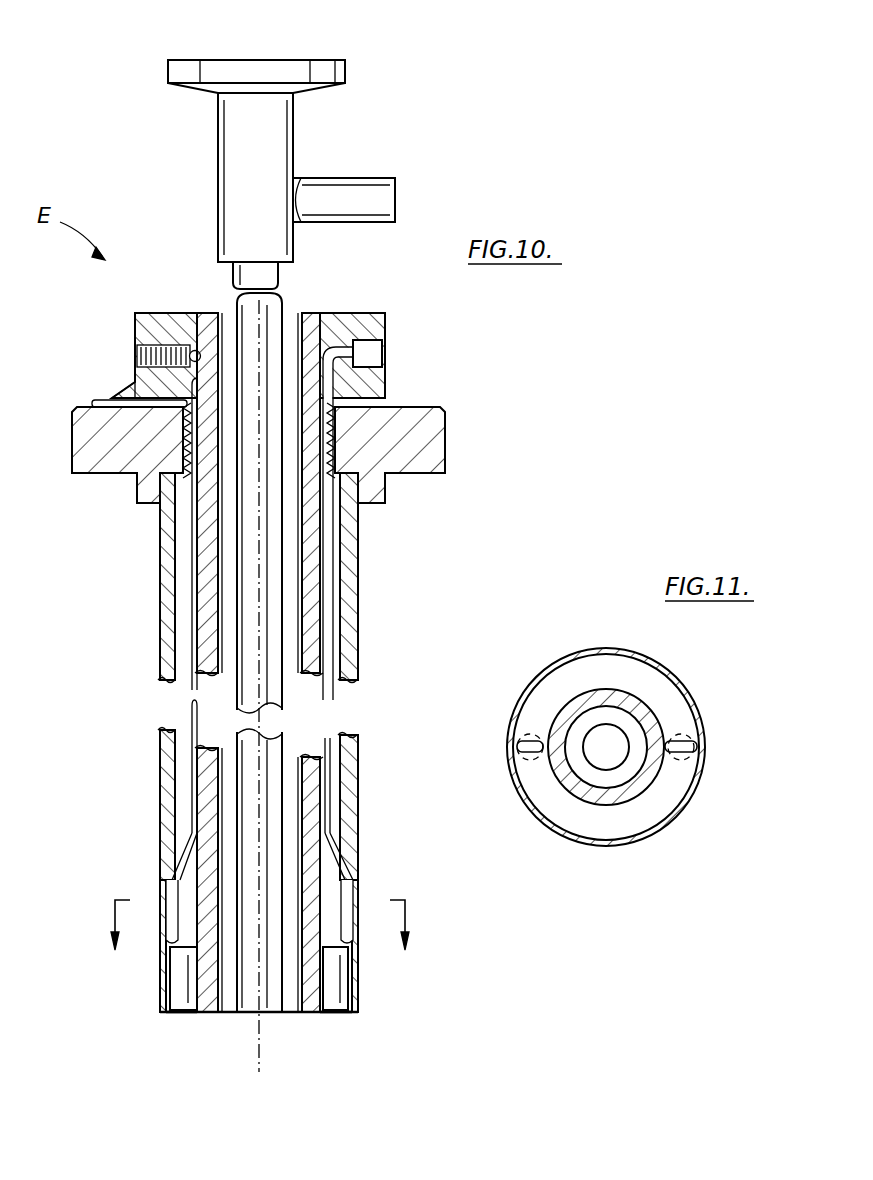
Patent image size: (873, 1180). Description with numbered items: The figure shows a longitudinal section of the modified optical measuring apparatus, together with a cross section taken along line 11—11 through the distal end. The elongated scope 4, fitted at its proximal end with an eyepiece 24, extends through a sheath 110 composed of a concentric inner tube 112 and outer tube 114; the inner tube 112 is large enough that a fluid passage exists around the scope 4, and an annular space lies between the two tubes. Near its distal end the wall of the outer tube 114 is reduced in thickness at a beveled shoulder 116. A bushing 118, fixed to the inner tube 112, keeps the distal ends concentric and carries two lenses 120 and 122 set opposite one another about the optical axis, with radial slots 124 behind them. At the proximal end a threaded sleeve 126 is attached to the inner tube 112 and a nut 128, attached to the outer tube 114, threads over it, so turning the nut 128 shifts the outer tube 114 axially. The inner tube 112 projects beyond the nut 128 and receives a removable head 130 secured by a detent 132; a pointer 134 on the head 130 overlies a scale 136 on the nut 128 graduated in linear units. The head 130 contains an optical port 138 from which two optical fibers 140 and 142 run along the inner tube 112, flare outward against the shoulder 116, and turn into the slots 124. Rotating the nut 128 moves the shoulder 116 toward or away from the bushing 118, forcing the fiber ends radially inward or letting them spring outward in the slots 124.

In FIG. 10, the scope 4 is at (272, 1005).
In FIG. 11, the scope 4 is at (612, 762).
In FIG. 10, the eyepiece 24 is at (305, 66).
In FIG. 10, the sheath 110 is at (365, 630).
In FIG. 10, the inner tube 112 is at (197, 578).
In FIG. 11, the inner tube 112 is at (630, 700).
In FIG. 10, the outer tube 114 is at (160, 622).
In FIG. 11, the outer tube 114 is at (602, 648).
In FIG. 10, the beveled shoulder 116 is at (175, 880).
In FIG. 10, the bushing 118 is at (206, 1014).
In FIG. 11, the bushing 118 is at (567, 820).
In FIG. 10, the lens 120 is at (180, 1012).
In FIG. 10, the lens 122 is at (332, 1014).
In FIG. 10, the slots 124 is at (175, 912).
In FIG. 11, the slots 124 is at (692, 738).
In FIG. 10, the threaded sleeve 126 is at (362, 505).
In FIG. 10, the nut 128 is at (447, 436).
In FIG. 10, the removable head 130 is at (372, 312).
In FIG. 10, the detent 132 is at (177, 312).
In FIG. 10, the pointer 134 is at (130, 387).
In FIG. 10, the scale 136 is at (92, 404).
In FIG. 10, the optical port 138 is at (386, 356).
In FIG. 10, the optical fiber 140 is at (190, 688).
In FIG. 11, the optical fiber 140 is at (517, 747).
In FIG. 10, the optical fiber 142 is at (345, 702).
In FIG. 11, the optical fiber 142 is at (698, 749).
In FIG. 10, the section line 11— 11 is at (261, 940).